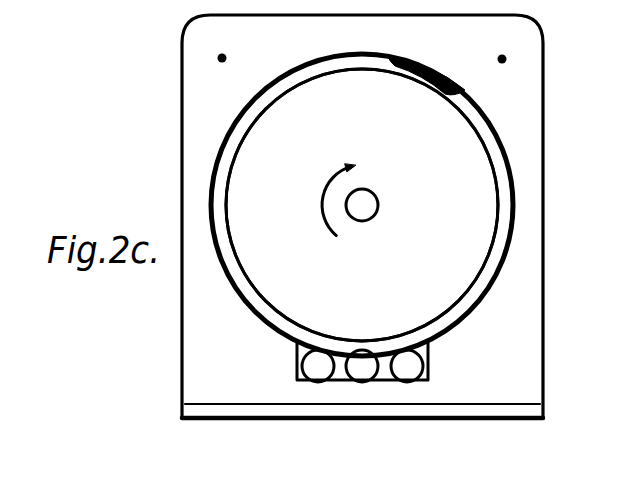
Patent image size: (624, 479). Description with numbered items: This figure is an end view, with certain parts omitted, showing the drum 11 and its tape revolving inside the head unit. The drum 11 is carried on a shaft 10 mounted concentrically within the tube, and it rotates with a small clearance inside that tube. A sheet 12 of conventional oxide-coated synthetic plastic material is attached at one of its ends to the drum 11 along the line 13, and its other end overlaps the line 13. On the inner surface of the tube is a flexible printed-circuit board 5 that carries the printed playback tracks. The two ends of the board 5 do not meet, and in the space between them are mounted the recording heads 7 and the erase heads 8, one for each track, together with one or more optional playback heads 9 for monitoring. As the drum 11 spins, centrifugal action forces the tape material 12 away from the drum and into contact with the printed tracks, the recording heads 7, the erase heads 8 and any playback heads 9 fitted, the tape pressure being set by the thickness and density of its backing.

The flexible printed-circuit board 5 is at (248, 305).
The recording heads 7 is at (360, 387).
The erase heads 8 is at (432, 364).
The playback heads 9 is at (308, 368).
The shaft 10 is at (379, 208).
The drum 11 is at (362, 205).
The sheet of oxide-coated synthetic plastic material 12 is at (462, 96).
The line 13 is at (442, 95).